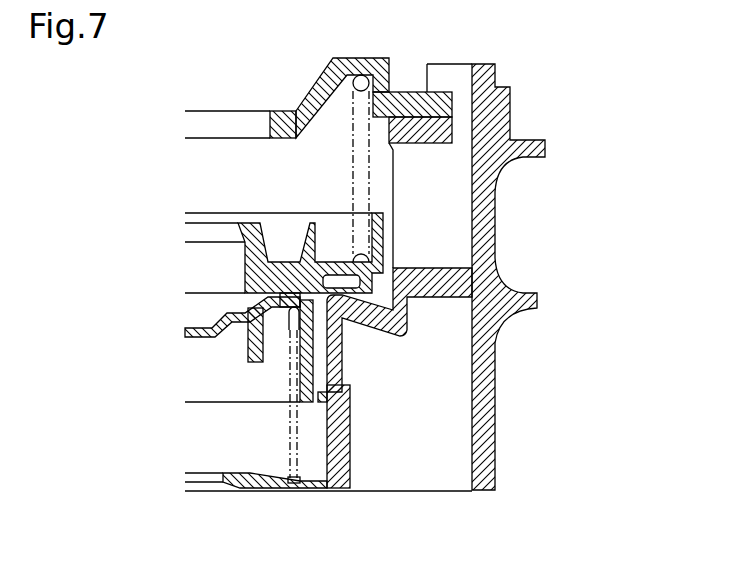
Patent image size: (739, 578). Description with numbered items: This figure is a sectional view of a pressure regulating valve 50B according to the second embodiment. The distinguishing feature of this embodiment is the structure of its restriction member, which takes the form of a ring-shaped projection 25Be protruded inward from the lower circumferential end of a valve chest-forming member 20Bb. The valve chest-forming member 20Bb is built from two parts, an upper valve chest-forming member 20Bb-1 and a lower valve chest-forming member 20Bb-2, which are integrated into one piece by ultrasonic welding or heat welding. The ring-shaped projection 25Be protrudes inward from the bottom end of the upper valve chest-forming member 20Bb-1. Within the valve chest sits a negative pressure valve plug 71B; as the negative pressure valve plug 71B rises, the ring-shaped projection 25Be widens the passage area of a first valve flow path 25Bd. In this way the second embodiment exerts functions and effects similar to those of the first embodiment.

The pressure regulating valve 50B is at (165, 299).
The negative pressure valve plug 71B is at (190, 340).
The valve chest-forming member 20Bb is at (516, 378).
The upper valve chest-forming member 20Bb-1 is at (340, 348).
The lower valve chest-forming member 20Bb-2 is at (347, 428).
The first valve flow path 25Bd is at (318, 357).
The ring-shaped projection 25Be is at (320, 388).